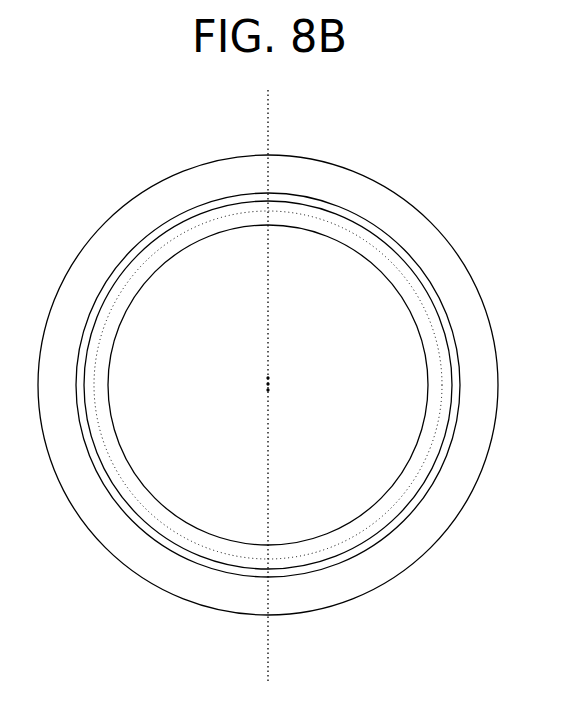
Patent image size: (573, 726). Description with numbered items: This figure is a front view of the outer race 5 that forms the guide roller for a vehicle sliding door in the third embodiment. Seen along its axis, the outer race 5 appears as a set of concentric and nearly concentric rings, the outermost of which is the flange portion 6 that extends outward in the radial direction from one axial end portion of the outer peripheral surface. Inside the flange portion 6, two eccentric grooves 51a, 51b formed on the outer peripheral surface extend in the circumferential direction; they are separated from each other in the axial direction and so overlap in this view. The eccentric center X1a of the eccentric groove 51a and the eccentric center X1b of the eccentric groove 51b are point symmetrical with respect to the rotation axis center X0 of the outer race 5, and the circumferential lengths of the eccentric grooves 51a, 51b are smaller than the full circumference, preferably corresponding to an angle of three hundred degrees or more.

The outer race 5 is at (408, 192).
The flange portion 6 is at (97, 257).
The eccentric groove 51a is at (317, 207).
The eccentric groove 51b is at (338, 567).
The rotation axis center X0 is at (268, 384).
The eccentric center X1a is at (268, 390).
The eccentric center X1b is at (268, 378).